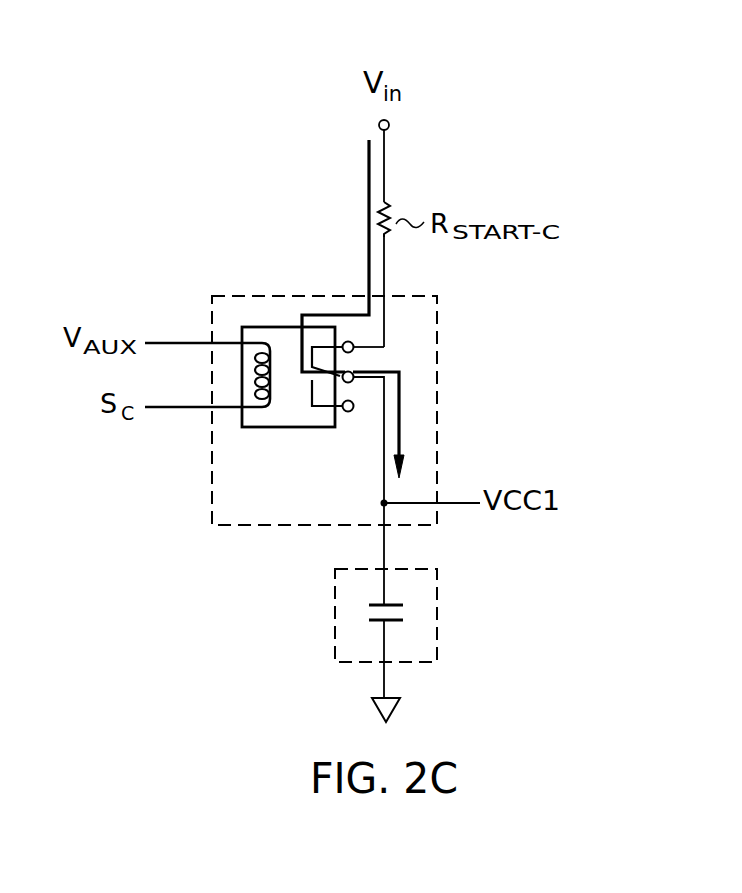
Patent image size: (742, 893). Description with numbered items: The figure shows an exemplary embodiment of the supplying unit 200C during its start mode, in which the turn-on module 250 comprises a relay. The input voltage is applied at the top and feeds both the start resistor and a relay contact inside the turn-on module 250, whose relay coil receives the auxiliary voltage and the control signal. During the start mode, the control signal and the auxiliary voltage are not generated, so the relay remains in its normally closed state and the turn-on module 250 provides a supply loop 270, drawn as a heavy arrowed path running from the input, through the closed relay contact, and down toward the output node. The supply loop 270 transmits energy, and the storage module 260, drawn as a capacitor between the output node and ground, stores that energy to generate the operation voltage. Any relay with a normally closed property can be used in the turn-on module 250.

The power supply start-up circuit 200C is at (156, 118).
The supply loop 270 is at (366, 172).
The turn-on module 250 is at (438, 347).
The storage module 260 is at (438, 607).